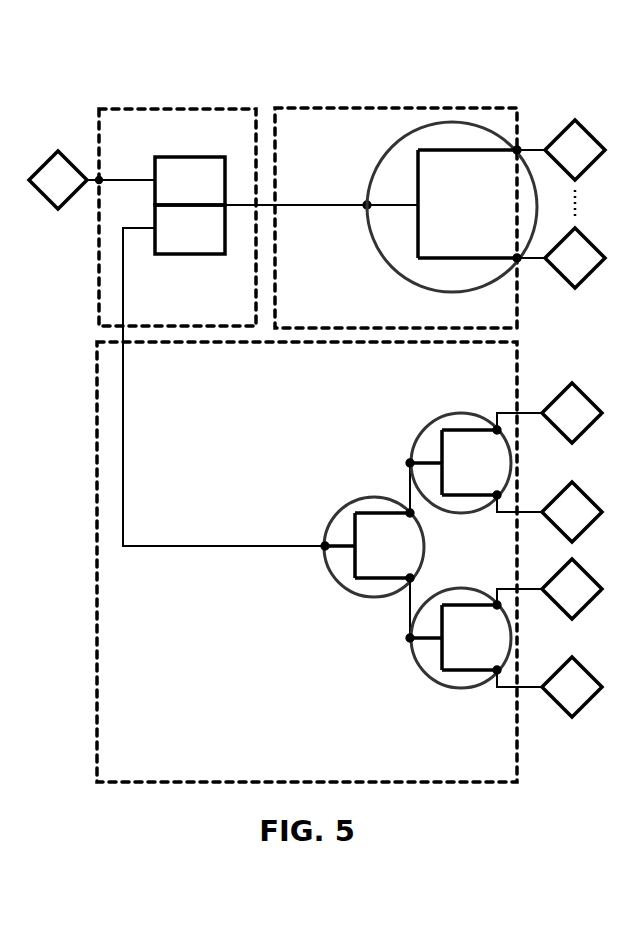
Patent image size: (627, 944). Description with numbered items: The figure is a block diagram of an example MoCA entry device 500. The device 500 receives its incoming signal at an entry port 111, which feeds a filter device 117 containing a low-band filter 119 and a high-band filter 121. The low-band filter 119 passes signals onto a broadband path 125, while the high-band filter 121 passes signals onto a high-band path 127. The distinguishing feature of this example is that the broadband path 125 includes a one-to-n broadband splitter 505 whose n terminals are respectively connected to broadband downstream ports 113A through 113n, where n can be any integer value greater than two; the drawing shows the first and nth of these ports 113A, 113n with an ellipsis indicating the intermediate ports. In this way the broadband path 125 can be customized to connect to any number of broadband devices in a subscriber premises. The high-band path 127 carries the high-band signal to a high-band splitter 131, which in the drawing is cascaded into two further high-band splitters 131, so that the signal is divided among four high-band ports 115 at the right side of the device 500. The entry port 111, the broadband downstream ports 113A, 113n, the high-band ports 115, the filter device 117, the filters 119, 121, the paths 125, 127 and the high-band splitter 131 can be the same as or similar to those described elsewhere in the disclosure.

The MoCA entry device 500 is at (522, 76).
The entry port 111 is at (92, 180).
The filter device 117 is at (160, 319).
The low-band filter 119 is at (172, 193).
The high-band filter 121 is at (172, 242).
The broadband path 125 is at (380, 321).
The one-to-n broadband splitter 505 is at (370, 184).
The broadband downstream port 113A is at (561, 150).
The broadband downstream port 113n is at (561, 258).
The high-band path 127 is at (290, 776).
The high-band splitter 131 is at (352, 502).
The high-band ports 115 is at (549, 550).